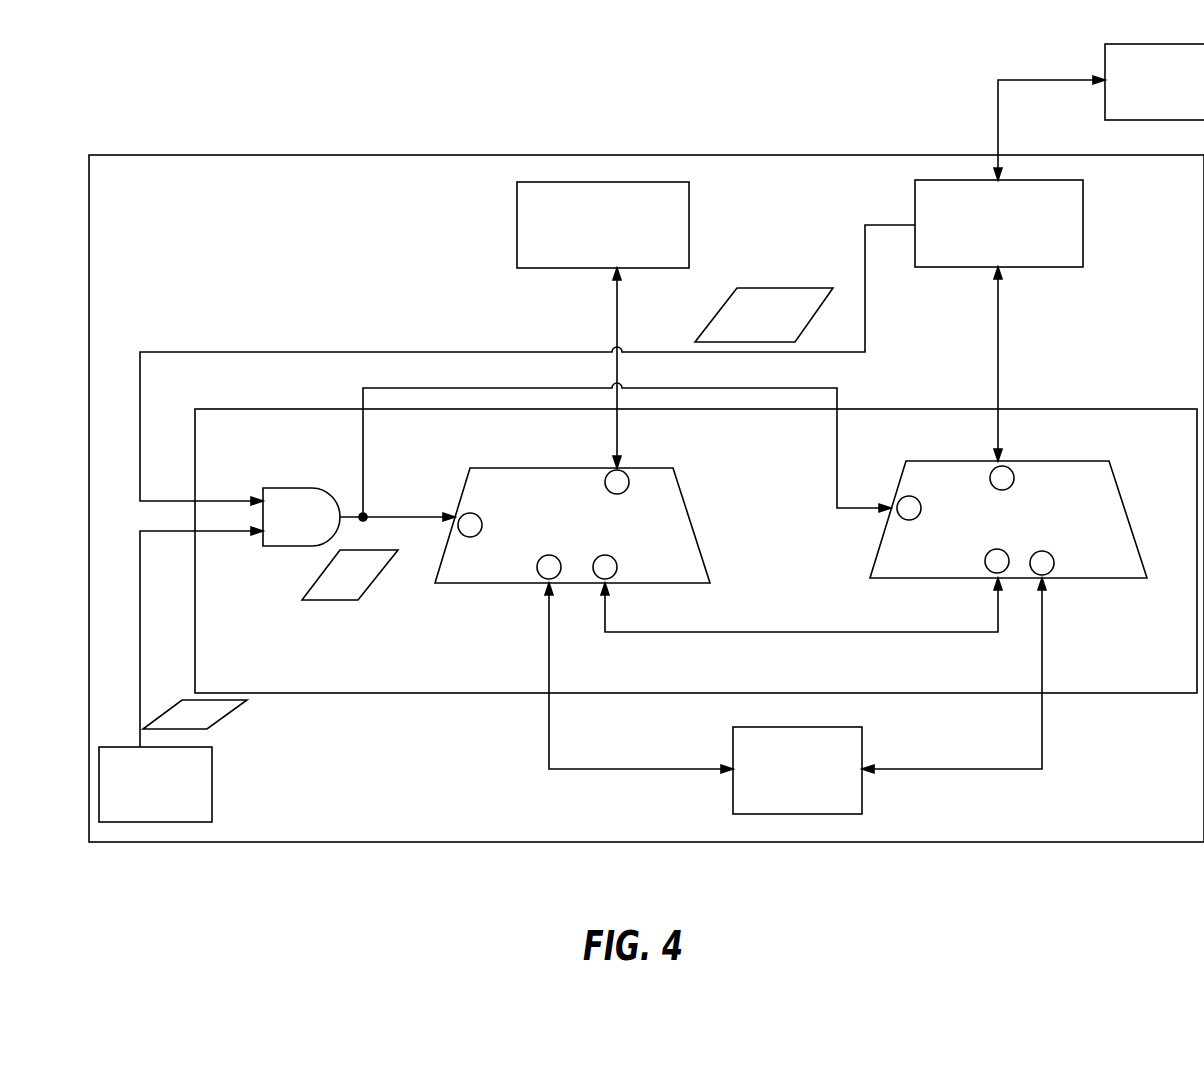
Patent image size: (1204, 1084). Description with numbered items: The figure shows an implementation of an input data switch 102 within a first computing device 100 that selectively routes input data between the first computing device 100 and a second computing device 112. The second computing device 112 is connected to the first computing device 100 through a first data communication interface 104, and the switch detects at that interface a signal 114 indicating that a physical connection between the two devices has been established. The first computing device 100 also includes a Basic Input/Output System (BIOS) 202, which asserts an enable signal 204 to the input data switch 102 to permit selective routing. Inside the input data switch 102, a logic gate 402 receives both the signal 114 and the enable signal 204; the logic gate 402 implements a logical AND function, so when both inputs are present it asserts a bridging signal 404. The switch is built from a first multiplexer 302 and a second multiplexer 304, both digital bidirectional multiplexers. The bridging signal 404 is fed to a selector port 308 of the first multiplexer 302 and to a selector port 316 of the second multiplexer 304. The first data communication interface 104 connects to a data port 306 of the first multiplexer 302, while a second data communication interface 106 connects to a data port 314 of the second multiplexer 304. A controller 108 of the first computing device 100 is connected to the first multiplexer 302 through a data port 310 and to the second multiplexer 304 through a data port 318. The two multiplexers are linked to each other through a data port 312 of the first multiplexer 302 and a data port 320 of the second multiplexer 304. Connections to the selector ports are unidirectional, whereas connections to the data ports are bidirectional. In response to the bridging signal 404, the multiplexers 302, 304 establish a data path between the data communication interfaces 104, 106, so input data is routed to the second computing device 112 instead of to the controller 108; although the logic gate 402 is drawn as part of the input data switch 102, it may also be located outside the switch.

The first computing device 100 is at (1123, 815).
The input data switch 102 is at (772, 672).
The first data communication interface 104 is at (983, 235).
The second data communication interface 106 is at (587, 237).
The controller 108 is at (782, 780).
The second computing device 112 is at (1162, 92).
The signal 114 is at (750, 325).
The Basic Input/Output System (BIOS) 202 is at (140, 795).
The enable signal 204 is at (180, 725).
The first multiplexer 302 is at (1006, 515).
The second multiplexer 304 is at (565, 522).
The data port 306 is at (1014, 475).
The selector port 308 is at (909, 496).
The data port 310 is at (1052, 551).
The data port 312 is at (985, 555).
The data port 314 is at (628, 474).
The selector port 316 is at (470, 513).
The data port 318 is at (537, 560).
The data port 320 is at (617, 558).
The logic gate 402 is at (285, 525).
The bridging signal 404 is at (333, 585).